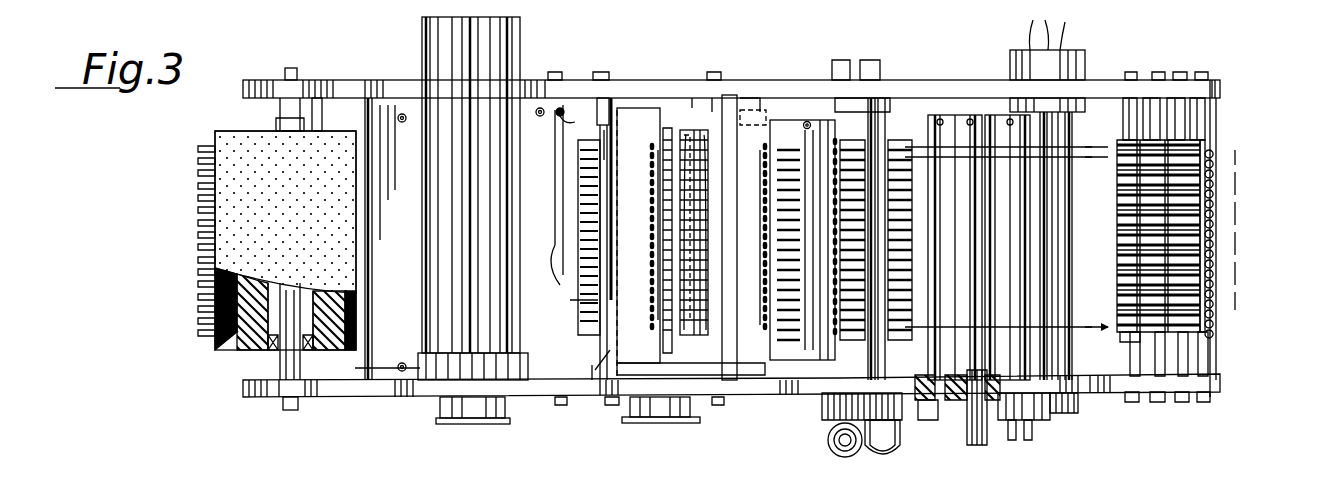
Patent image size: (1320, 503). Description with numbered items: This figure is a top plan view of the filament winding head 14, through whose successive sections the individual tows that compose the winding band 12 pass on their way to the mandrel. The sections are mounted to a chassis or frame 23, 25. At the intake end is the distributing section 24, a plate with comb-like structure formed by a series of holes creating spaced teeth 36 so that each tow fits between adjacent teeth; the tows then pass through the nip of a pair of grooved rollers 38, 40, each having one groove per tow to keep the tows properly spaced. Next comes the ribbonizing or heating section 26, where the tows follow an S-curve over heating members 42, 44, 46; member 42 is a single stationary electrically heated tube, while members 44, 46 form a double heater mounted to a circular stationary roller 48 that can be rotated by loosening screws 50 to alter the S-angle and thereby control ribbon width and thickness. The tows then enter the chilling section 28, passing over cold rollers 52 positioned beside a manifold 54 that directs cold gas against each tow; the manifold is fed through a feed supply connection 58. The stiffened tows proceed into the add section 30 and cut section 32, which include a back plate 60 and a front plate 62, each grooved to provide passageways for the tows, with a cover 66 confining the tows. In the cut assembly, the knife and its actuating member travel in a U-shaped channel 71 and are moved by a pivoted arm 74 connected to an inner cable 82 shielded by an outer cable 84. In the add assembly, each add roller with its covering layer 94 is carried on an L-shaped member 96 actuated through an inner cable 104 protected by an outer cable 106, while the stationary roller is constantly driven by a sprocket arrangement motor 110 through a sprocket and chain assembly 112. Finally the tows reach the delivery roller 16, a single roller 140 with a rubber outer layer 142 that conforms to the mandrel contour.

The winding band 12 is at (200, 210).
The filament winding head 14 is at (1242, 85).
The delivery roller 16 is at (212, 138).
The chassis or frame 23 is at (265, 398).
The distributing section 24 is at (1145, 112).
The chassis or frame 25 is at (308, 96).
The ribbonizing or heating section 26 is at (976, 72).
The chilling section 28 is at (806, 92).
The add section 30 is at (690, 90).
The cut section 32 is at (587, 100).
The spaced teeth 36 is at (1218, 272).
The grooved roller 38 is at (1195, 135).
The grooved roller 40 is at (1127, 322).
The heating member 42 is at (1048, 190).
The heating member 44 is at (1035, 425).
The heating member 46 is at (965, 118).
The circular stationary roller 48 is at (1068, 410).
The screws 50 is at (930, 422).
The cold roller 52 is at (835, 343).
The manifold 54 is at (850, 396).
The feed supply connection 58 is at (880, 452).
The back plate 60 is at (680, 110).
The front plate 62 is at (372, 382).
The cover 66 is at (350, 118).
The U-shaped channel 71 is at (592, 375).
The pivoted arm 74 is at (598, 305).
The inner cable 82 is at (656, 322).
The outer cable 84 is at (654, 297).
The covering layer 94 is at (702, 168).
The L-shaped member 96 is at (705, 302).
The inner cable 104 is at (764, 242).
The outer cable 106 is at (764, 212).
The sprocket arrangement motor 110 is at (440, 300).
The sprocket and chain assembly 112 is at (672, 420).
The single roller 140 is at (252, 350).
The rubber outer layer 142 is at (220, 338).